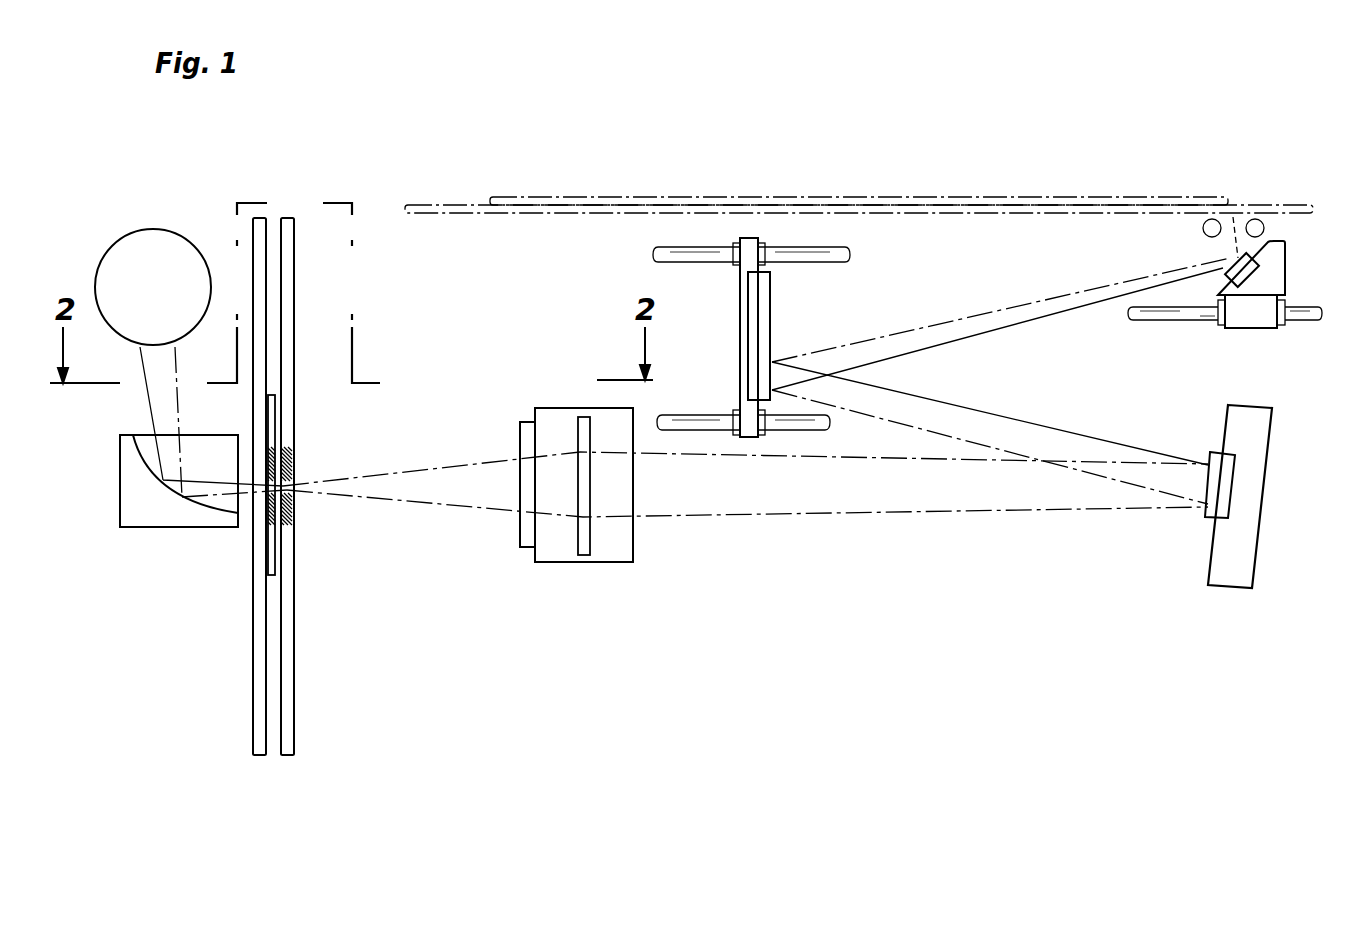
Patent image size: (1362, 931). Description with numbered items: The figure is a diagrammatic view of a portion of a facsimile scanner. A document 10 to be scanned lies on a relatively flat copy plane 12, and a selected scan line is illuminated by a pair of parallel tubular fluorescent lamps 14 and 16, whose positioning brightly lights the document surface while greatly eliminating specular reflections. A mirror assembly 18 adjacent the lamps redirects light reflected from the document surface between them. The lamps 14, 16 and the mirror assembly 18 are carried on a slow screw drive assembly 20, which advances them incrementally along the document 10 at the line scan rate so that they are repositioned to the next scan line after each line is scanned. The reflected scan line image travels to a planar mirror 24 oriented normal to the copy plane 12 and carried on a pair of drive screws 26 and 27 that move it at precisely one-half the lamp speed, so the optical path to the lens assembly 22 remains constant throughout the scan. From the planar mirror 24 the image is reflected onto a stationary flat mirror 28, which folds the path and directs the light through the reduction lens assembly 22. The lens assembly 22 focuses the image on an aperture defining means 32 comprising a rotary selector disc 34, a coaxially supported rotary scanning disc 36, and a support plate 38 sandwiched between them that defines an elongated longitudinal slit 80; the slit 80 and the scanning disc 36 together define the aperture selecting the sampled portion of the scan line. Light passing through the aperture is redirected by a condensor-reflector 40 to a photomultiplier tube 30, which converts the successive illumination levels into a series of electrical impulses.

The document 10 is at (1130, 195).
The copy plane 12 is at (505, 217).
The fluorescent lamp 14 is at (1202, 224).
The fluorescent lamp 16 is at (1262, 220).
The mirror assembly 18 is at (1262, 276).
The slow screw drive assembly 20 is at (1236, 323).
The lens assembly 22 is at (572, 562).
The planar mirror 24 is at (765, 300).
The drive screw 26 is at (702, 413).
The drive screw 27 is at (657, 260).
The stationary flat mirror 28 is at (1210, 520).
The photomultiplier tube 30 is at (138, 232).
The aperture defining means 32 is at (298, 456).
The rotary selector disc 34 is at (295, 678).
The rotary scanning disc 36 is at (252, 670).
The support plate 38 is at (276, 395).
The condensor-reflector 40 is at (177, 527).
The longitudinal slit 80 is at (292, 512).